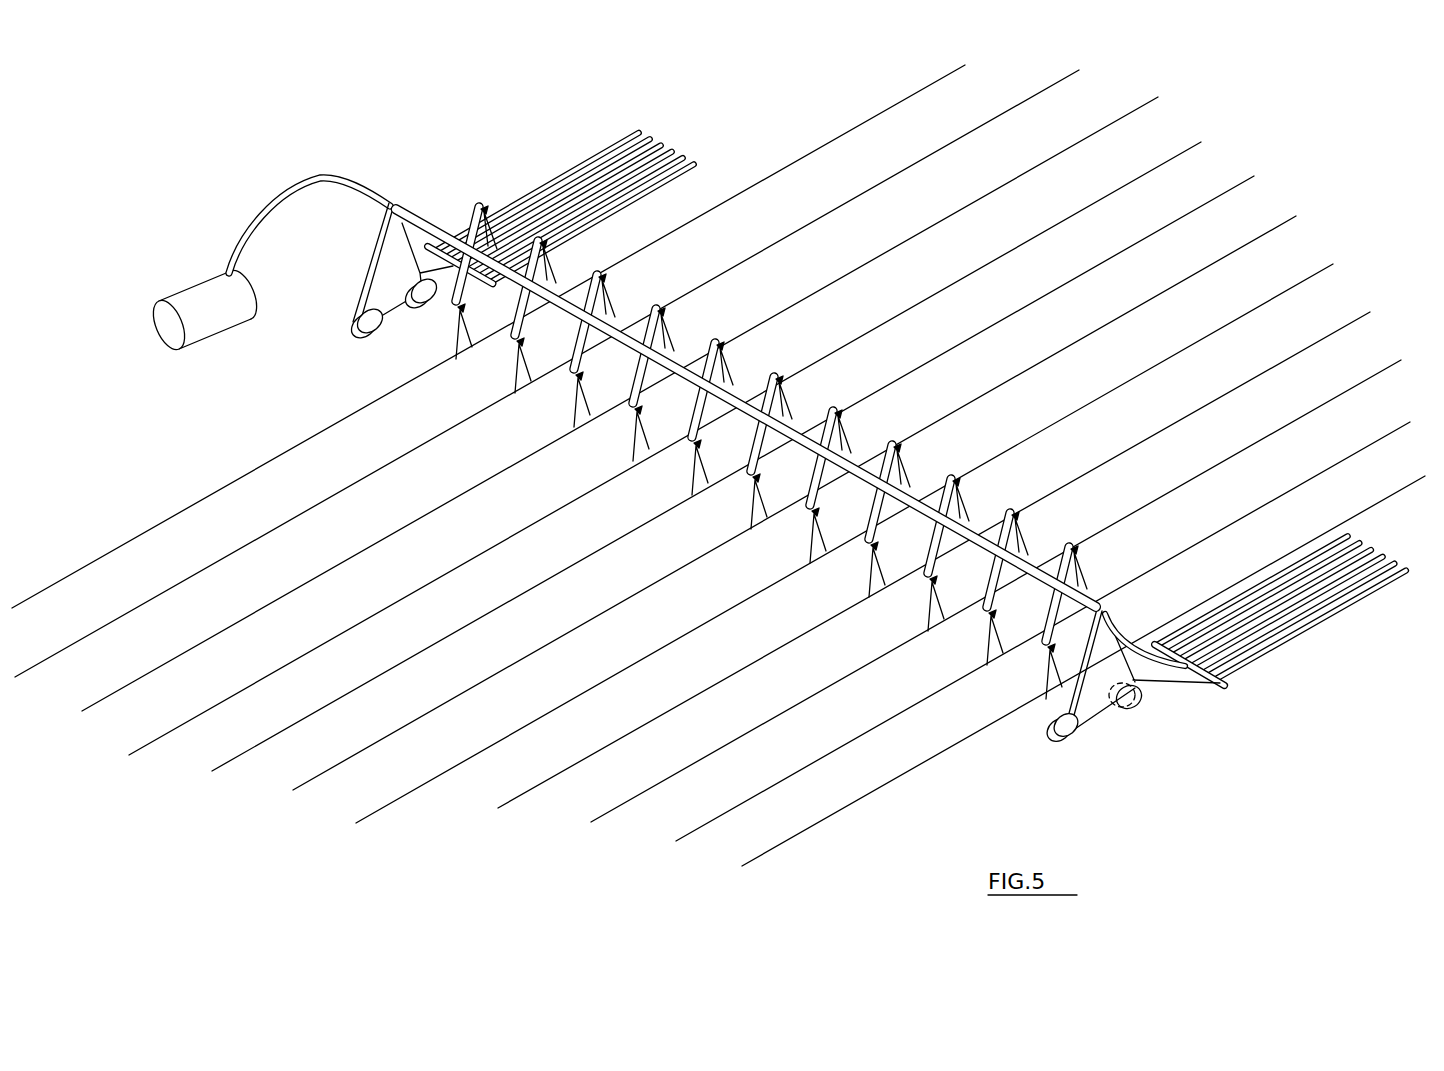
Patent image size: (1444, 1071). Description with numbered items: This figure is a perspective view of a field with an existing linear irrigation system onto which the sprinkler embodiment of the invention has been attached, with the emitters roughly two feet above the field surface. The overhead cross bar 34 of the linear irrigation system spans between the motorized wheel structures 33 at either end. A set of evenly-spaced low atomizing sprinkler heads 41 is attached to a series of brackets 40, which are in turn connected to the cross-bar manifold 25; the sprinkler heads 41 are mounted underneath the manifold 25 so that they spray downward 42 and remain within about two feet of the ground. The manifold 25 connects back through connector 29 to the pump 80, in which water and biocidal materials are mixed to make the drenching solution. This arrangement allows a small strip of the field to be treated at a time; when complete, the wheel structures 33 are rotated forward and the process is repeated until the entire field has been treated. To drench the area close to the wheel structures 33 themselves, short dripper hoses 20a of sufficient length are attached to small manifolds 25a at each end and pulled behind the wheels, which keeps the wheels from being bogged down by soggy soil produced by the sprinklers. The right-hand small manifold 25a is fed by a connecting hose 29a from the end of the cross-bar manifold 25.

The short dripper hoses 20a is at (532, 192).
The manifold 25 is at (418, 222).
The small manifolds 25a is at (487, 287).
The connector 29 is at (278, 190).
The connecting hose 29a is at (1130, 633).
The wheel structures 33 is at (393, 257).
The cross bar 34 is at (570, 308).
The brackets 40 is at (799, 458).
The sprinkler heads 41 is at (692, 452).
The downward spray 42 is at (722, 373).
The pump 80 is at (197, 292).